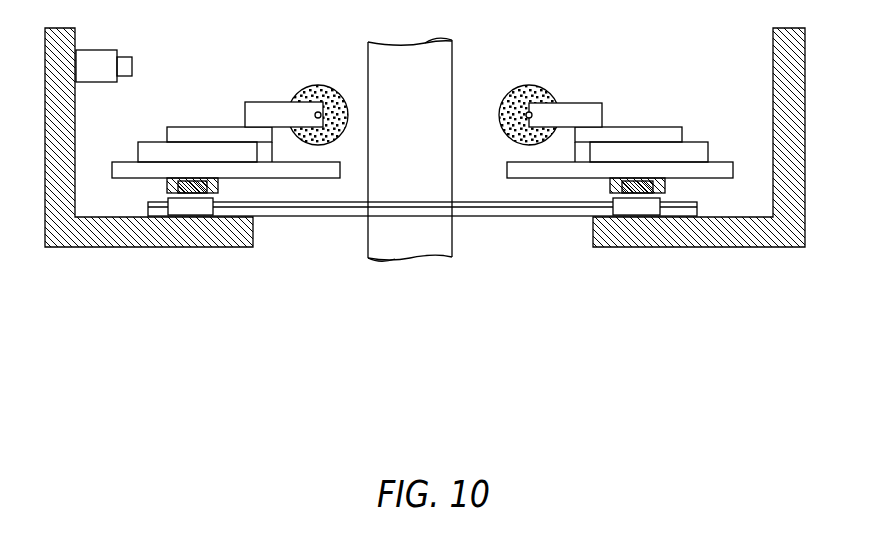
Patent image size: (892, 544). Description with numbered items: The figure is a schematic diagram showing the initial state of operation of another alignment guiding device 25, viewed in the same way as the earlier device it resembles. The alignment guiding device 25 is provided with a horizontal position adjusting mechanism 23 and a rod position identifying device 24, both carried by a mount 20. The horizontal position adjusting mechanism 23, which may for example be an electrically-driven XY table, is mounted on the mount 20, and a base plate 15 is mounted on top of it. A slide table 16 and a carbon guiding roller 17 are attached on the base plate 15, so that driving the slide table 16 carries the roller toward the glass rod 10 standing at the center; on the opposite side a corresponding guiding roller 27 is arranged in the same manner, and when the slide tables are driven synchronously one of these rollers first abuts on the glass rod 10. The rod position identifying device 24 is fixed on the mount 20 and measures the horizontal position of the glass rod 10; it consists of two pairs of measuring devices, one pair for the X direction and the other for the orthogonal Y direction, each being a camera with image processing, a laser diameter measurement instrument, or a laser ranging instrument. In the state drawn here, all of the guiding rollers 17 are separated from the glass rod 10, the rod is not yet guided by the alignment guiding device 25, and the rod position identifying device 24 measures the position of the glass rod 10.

The glass rod 10 is at (422, 91).
The base plate 15 is at (547, 178).
The slide table 16 is at (667, 127).
The carbon guiding roller 17 is at (532, 86).
The mount 20 is at (773, 33).
The horizontal position adjusting mechanism 23 is at (665, 185).
The rod position identifying device 24 is at (124, 57).
The alignment guiding device 25 is at (738, 90).
The guiding roller 27 is at (317, 86).